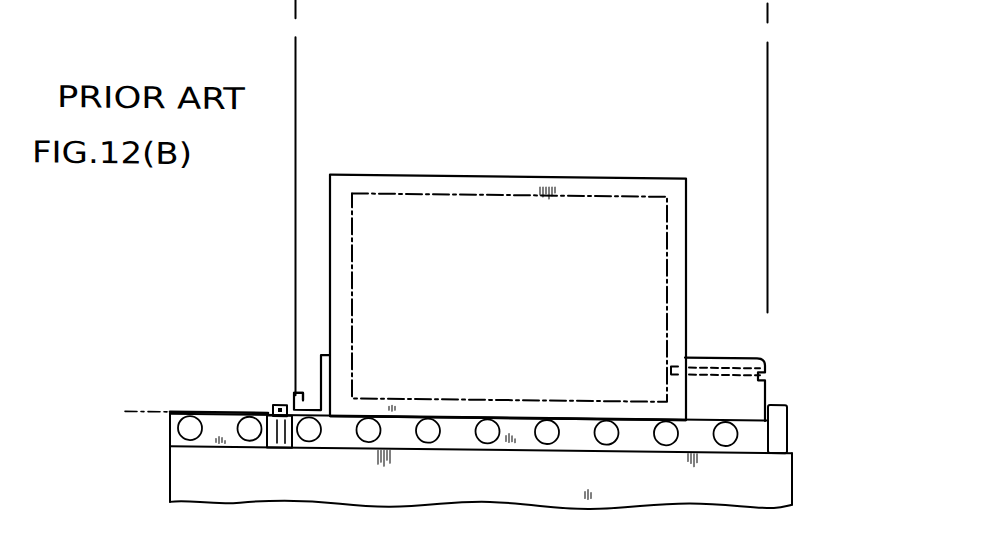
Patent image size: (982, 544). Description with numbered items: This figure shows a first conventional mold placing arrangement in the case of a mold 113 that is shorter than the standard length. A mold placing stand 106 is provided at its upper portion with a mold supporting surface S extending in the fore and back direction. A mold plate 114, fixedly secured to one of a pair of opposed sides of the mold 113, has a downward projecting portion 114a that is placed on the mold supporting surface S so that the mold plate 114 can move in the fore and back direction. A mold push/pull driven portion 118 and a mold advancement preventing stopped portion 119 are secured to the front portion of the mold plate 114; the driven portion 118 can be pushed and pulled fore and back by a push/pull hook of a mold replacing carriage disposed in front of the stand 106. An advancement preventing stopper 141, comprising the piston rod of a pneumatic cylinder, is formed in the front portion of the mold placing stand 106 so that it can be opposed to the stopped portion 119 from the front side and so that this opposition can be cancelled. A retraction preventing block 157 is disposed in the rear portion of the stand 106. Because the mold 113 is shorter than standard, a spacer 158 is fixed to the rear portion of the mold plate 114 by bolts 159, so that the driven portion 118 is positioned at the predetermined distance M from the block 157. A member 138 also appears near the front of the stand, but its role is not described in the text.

The predetermined distance M is at (768, 52).
The mold placing stand 106 is at (797, 473).
The mold supporting surface S is at (203, 409).
The sheet feed roller block 138 is at (278, 443).
The advancement preventing stopper 141 is at (277, 402).
The mold plate 114 is at (407, 172).
The downward projecting portion 114a is at (458, 401).
The mold 113 is at (480, 190).
The mold push/pull driven portion 118 is at (302, 389).
The mold advancement preventing stopped portion 119 is at (292, 391).
The spacer 158 is at (704, 350).
The bolts 159 is at (727, 360).
The retraction preventing block 157 is at (788, 412).